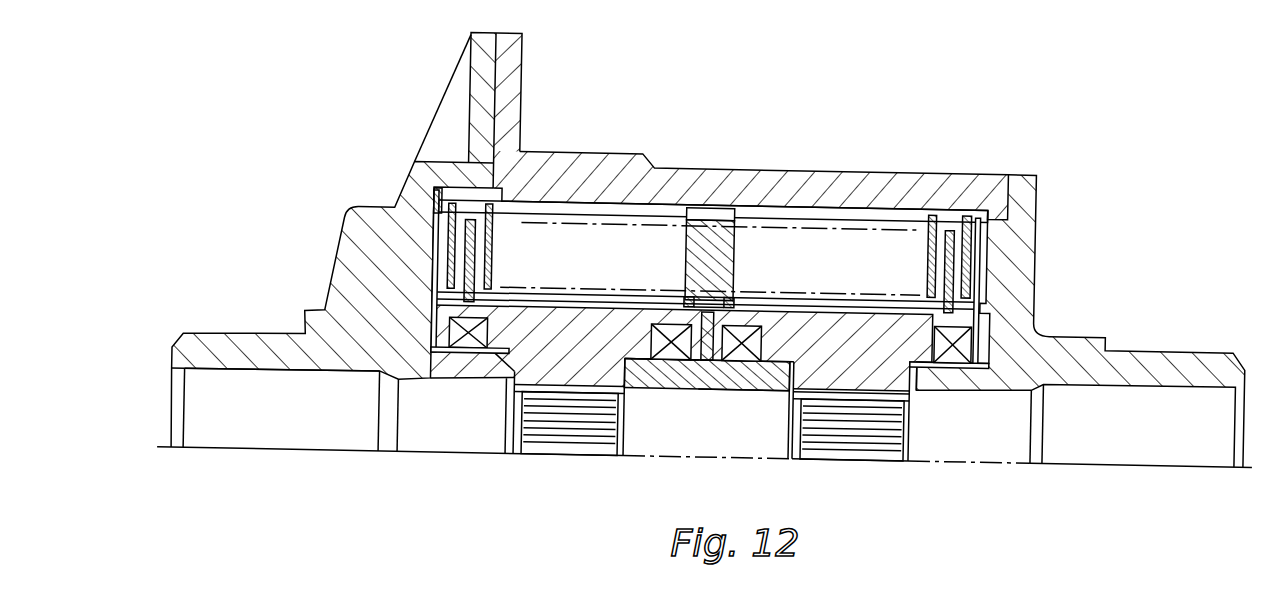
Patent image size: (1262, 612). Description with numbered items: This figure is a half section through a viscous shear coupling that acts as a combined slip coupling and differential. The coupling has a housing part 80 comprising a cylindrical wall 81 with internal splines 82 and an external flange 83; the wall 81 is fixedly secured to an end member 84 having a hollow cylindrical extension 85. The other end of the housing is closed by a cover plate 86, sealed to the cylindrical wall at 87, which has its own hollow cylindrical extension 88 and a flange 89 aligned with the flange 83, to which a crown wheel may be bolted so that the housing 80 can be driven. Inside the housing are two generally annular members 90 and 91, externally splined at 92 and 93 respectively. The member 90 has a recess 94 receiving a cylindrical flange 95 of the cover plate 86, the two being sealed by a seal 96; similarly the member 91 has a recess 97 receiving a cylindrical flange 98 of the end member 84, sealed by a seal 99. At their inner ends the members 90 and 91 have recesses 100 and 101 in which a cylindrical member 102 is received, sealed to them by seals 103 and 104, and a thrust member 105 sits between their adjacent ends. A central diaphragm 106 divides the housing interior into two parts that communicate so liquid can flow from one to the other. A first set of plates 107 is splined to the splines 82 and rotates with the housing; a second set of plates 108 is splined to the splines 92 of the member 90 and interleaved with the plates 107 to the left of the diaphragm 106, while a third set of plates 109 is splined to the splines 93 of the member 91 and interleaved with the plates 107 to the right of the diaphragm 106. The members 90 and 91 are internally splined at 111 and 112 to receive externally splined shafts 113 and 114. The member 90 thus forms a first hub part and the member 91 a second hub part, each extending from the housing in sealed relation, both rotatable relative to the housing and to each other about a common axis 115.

The housing part 80 is at (766, 146).
The cylindrical wall 81 is at (848, 172).
The internal splines 82 is at (902, 206).
The external flange 83 is at (511, 97).
The end member 84 is at (1018, 221).
The hollow cylindrical extension 85 is at (1180, 342).
The cover plate 86 is at (358, 245).
The seal location 87 is at (432, 210).
The hollow cylindrical extension 88 is at (210, 341).
The flange 89 is at (467, 82).
The annular member 90 is at (617, 310).
The annular member 91 is at (843, 320).
The external splines 92 is at (552, 299).
The external splines 93 is at (790, 308).
The recess 94 is at (508, 355).
The cylindrical flange 95 is at (452, 378).
The seal 96 is at (504, 372).
The recess 97 is at (923, 356).
The cylindrical flange 98 is at (936, 360).
The seal 99 is at (960, 352).
The recess 100 is at (636, 376).
The recess 101 is at (770, 391).
The cylindrical member 102 is at (708, 409).
The seal 103 is at (670, 362).
The seal 104 is at (740, 362).
The thrust member 105 is at (742, 314).
The central diaphragm 106 is at (686, 250).
The first set of plates 107 is at (454, 213).
The second set of plates 108 is at (474, 265).
The third set of plates 109 is at (950, 272).
The internal splines 111 is at (567, 440).
The internal splines 112 is at (873, 446).
The shaft 113 is at (288, 440).
The shaft 114 is at (1110, 456).
The common axis 115 is at (1205, 462).